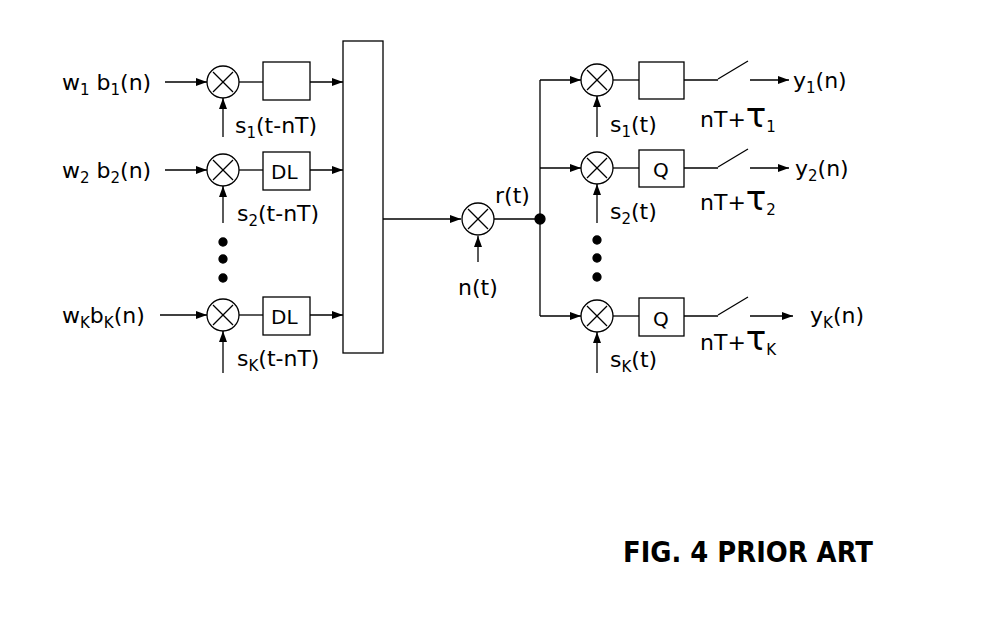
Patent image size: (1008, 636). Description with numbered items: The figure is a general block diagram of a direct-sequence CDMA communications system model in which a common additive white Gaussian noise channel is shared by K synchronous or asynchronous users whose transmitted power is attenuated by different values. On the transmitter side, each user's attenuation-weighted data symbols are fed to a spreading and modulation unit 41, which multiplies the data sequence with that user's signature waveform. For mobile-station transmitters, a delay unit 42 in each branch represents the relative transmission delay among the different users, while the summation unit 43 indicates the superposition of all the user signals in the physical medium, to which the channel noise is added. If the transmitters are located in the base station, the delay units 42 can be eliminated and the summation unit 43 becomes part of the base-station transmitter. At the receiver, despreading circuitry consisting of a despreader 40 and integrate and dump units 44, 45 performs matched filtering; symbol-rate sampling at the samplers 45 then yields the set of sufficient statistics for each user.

The despreader 40 is at (593, 59).
The spreading and modulation unit 41 is at (217, 62).
The delay unit 42 is at (299, 58).
The summation unit 43 is at (361, 50).
The integrate and dump unit 44 is at (648, 56).
The sampler 45 is at (729, 64).